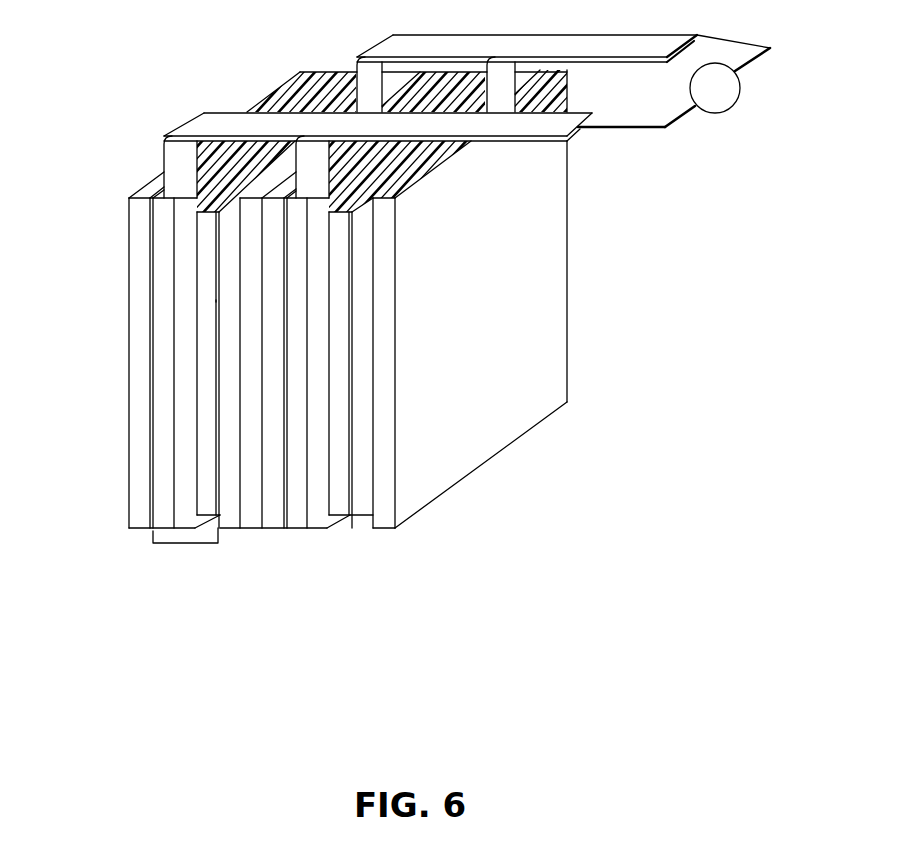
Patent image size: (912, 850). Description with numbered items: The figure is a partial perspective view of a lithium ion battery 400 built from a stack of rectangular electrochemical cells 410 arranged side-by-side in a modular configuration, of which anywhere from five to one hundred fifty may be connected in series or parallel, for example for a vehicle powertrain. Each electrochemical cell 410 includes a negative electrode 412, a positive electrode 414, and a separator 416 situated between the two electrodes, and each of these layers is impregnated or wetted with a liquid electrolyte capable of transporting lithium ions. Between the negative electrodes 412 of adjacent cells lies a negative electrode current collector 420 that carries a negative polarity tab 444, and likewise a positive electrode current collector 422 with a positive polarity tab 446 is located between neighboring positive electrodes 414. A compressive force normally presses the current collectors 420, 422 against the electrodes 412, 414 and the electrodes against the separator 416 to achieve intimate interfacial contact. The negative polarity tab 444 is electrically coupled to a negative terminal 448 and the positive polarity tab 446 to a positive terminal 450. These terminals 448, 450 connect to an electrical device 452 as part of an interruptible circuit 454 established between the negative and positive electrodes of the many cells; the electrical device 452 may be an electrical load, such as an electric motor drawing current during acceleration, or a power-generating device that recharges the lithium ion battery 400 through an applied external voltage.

The lithium ion battery 400 is at (148, 68).
The electrochemical cell 410 is at (183, 544).
The negative electrode 412 is at (165, 455).
The positive electrode 414 is at (232, 272).
The separator 416 is at (185, 410).
The negative electrode current collector 420 is at (140, 318).
The positive electrode current collector 422 is at (217, 300).
The negative polarity tab 444 is at (158, 166).
The positive polarity tab 446 is at (326, 82).
The negative terminal 448 is at (541, 142).
The positive terminal 450 is at (588, 66).
The electrical device 452 is at (719, 92).
The interruptible circuit 454 is at (668, 134).